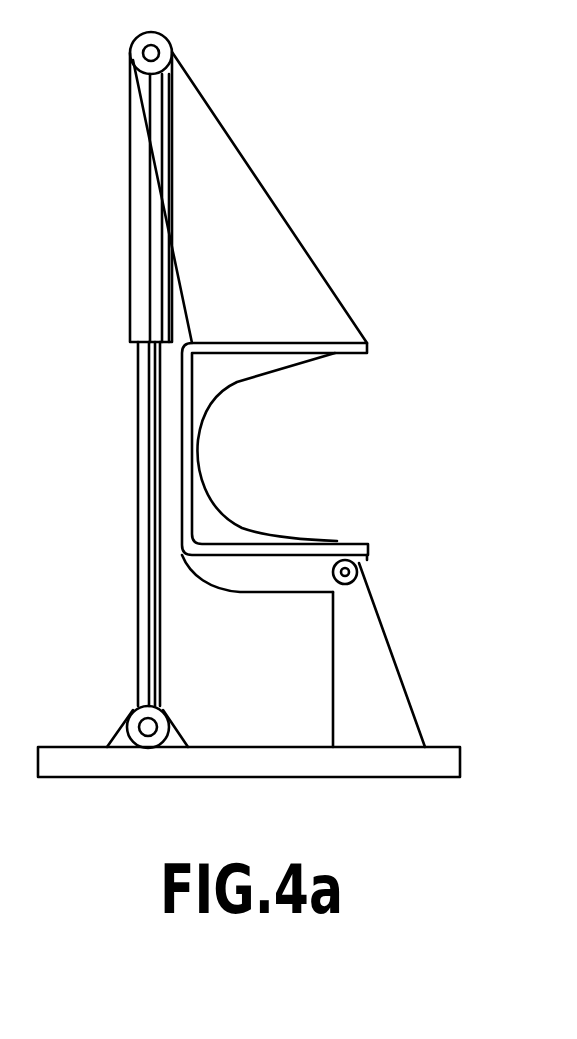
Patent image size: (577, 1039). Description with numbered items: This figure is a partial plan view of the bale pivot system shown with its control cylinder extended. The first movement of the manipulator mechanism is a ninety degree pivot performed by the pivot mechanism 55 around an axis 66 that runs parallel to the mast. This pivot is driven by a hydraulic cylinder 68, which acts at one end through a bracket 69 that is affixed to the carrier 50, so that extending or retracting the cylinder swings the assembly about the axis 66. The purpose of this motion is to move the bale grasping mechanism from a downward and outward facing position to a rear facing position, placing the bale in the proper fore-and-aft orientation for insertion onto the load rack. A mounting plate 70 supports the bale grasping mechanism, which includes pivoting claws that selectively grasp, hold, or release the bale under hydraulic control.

The carrier 50 is at (243, 389).
The pivot mechanism 55 is at (386, 243).
The axis 66 is at (357, 566).
The hydraulic cylinder 68 is at (140, 282).
The bracket 69 is at (237, 170).
The mounting plate 70 is at (293, 767).